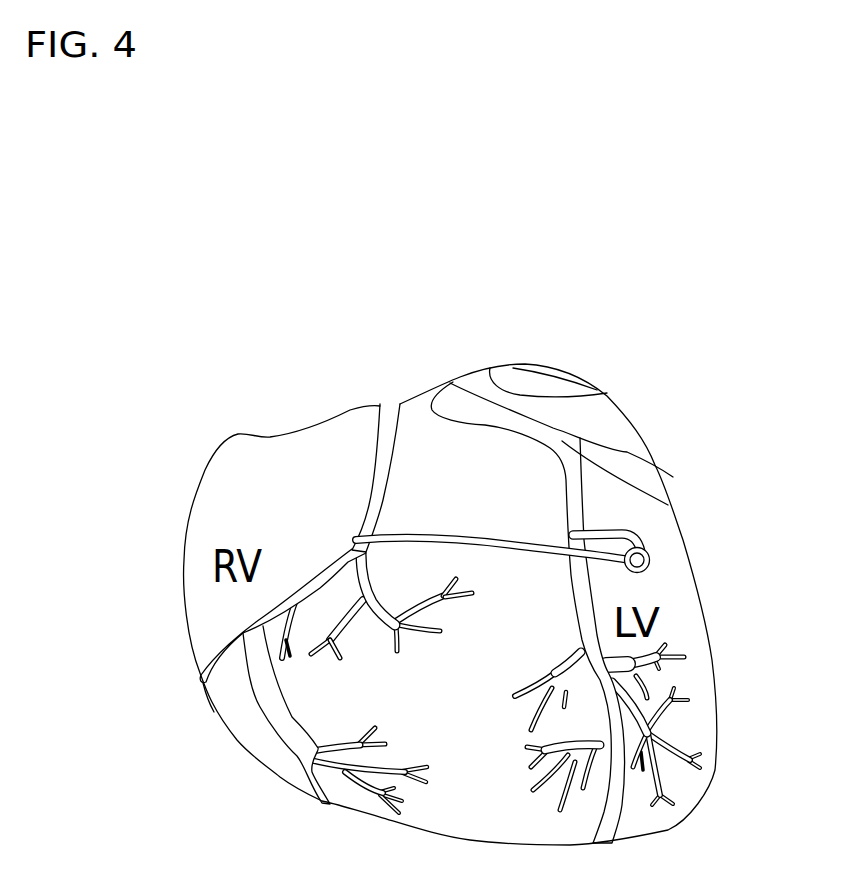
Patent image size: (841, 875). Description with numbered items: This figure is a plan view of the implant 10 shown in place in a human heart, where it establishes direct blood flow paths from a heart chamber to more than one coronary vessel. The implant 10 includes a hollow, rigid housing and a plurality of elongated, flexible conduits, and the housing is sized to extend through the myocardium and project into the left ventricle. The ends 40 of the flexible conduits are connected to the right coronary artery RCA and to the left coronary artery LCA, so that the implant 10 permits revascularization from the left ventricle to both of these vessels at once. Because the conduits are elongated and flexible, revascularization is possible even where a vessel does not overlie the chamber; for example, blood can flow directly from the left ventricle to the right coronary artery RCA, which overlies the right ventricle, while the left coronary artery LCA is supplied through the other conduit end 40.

The implant 10 is at (660, 562).
The ends of the flexible conduits 40 is at (354, 538).
The right coronary artery RCA is at (372, 473).
The left coronary artery LCA is at (584, 512).